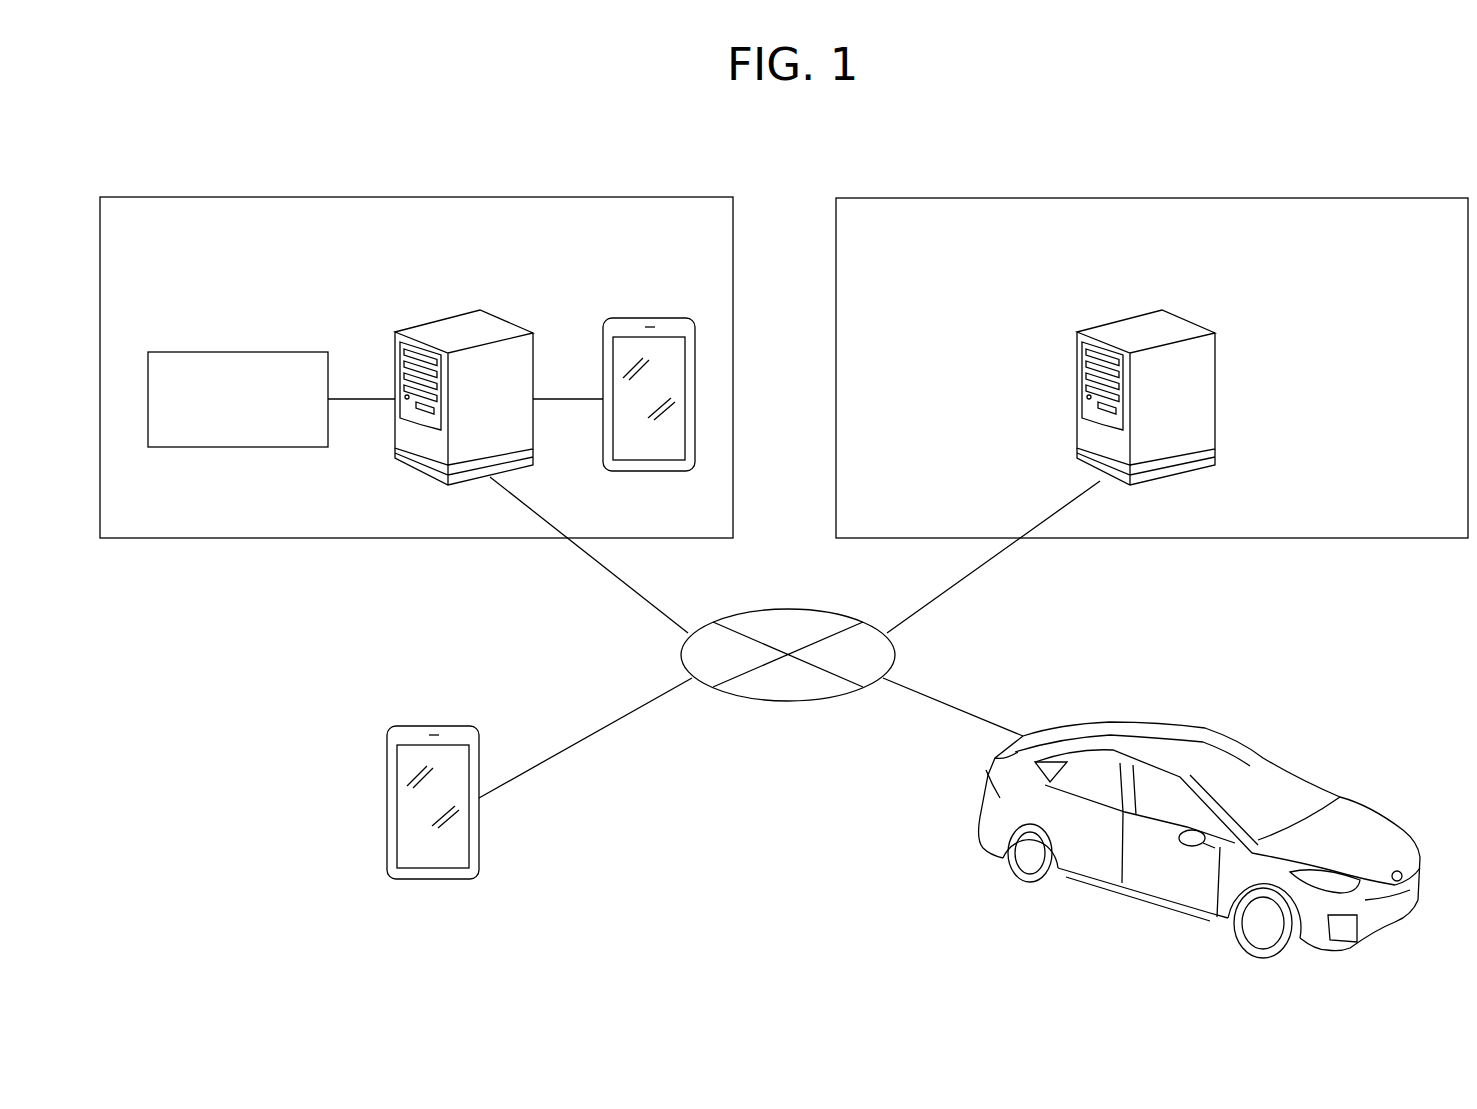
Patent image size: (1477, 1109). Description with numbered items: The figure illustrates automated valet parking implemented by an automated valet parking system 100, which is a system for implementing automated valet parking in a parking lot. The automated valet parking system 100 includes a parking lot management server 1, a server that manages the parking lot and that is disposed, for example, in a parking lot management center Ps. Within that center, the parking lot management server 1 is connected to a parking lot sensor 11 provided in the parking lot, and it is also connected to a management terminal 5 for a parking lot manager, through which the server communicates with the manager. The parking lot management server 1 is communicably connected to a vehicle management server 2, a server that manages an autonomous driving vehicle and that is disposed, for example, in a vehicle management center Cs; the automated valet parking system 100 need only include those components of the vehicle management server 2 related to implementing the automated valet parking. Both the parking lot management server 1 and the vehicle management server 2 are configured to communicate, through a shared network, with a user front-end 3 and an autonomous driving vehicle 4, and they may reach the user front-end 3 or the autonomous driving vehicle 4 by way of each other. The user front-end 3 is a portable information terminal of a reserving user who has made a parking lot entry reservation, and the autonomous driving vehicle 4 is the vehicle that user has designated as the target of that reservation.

The automated valet parking system 100 is at (951, 165).
The parking lot management center Ps is at (381, 197).
The vehicle management center Cs is at (1115, 198).
The parking lot management server 1 is at (460, 315).
The vehicle management server 2 is at (1133, 317).
The user front-end 3 is at (452, 726).
The autonomous driving vehicle 4 is at (1238, 737).
The management terminal 5 is at (672, 318).
The parking lot sensor 11 is at (286, 352).